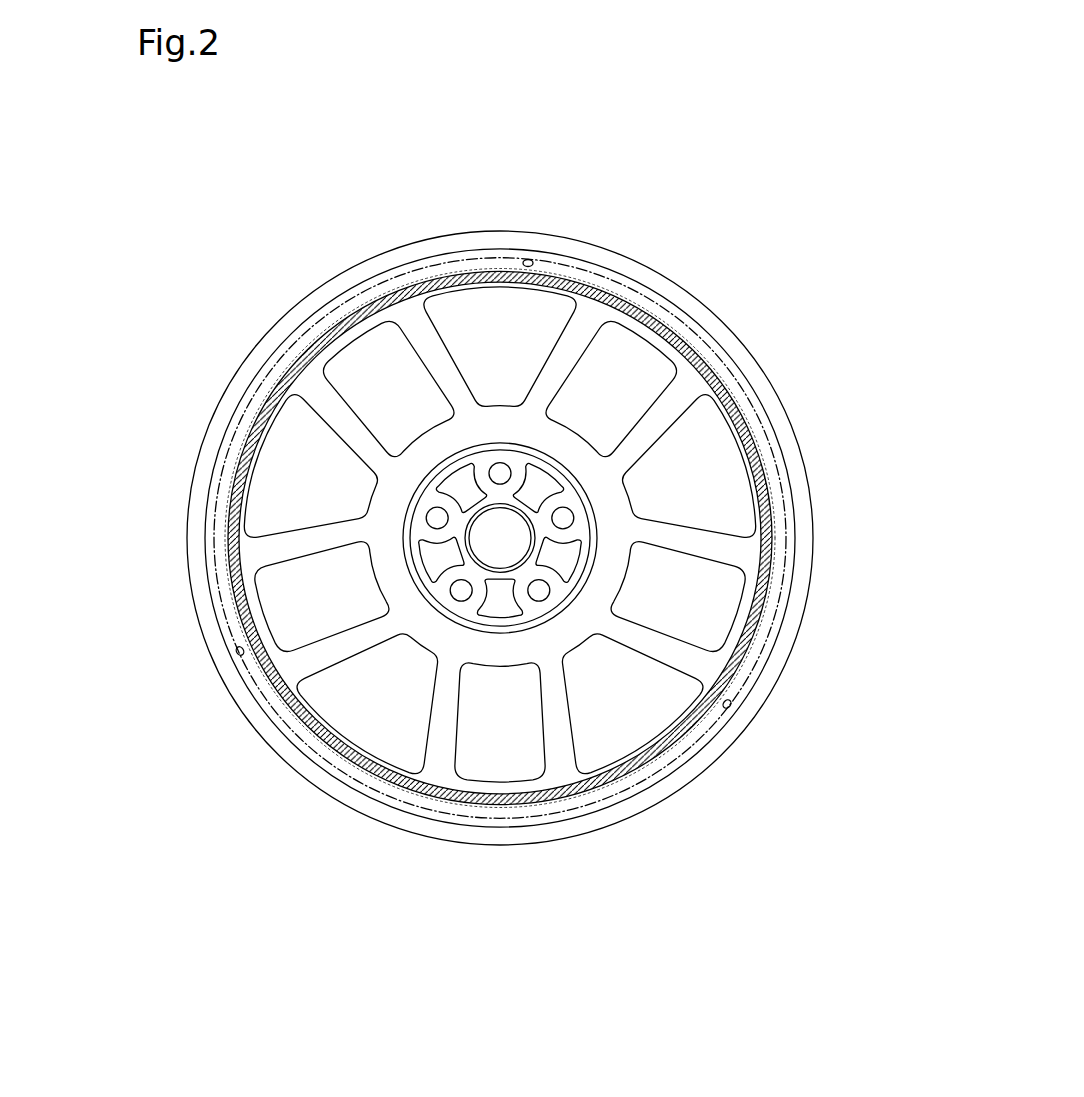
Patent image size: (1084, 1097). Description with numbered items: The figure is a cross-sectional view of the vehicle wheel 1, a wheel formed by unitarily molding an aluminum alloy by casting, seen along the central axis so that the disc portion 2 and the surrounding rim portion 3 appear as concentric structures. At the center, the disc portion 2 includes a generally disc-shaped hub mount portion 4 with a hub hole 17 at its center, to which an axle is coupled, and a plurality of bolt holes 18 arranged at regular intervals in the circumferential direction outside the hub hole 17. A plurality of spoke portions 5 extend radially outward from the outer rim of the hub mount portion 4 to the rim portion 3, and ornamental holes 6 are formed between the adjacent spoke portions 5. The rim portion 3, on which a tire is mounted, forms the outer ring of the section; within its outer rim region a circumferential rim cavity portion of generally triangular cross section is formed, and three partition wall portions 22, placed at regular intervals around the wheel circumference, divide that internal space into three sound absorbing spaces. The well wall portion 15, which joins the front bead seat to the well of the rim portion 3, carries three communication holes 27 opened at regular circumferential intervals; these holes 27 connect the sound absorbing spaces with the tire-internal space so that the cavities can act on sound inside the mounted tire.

The vehicle wheel 1 is at (797, 130).
The disc portion 2 is at (770, 390).
The rim portion 3 is at (290, 545).
The hub mount portion 4 is at (472, 598).
The spoke portions 5 is at (338, 400).
The ornamental holes 6 is at (468, 318).
The well wall portion 15 is at (697, 315).
The hub hole 17 is at (570, 698).
The bolt holes 18 is at (500, 469).
The partition wall portions 22 is at (500, 538).
The communication holes 27 is at (528, 258).